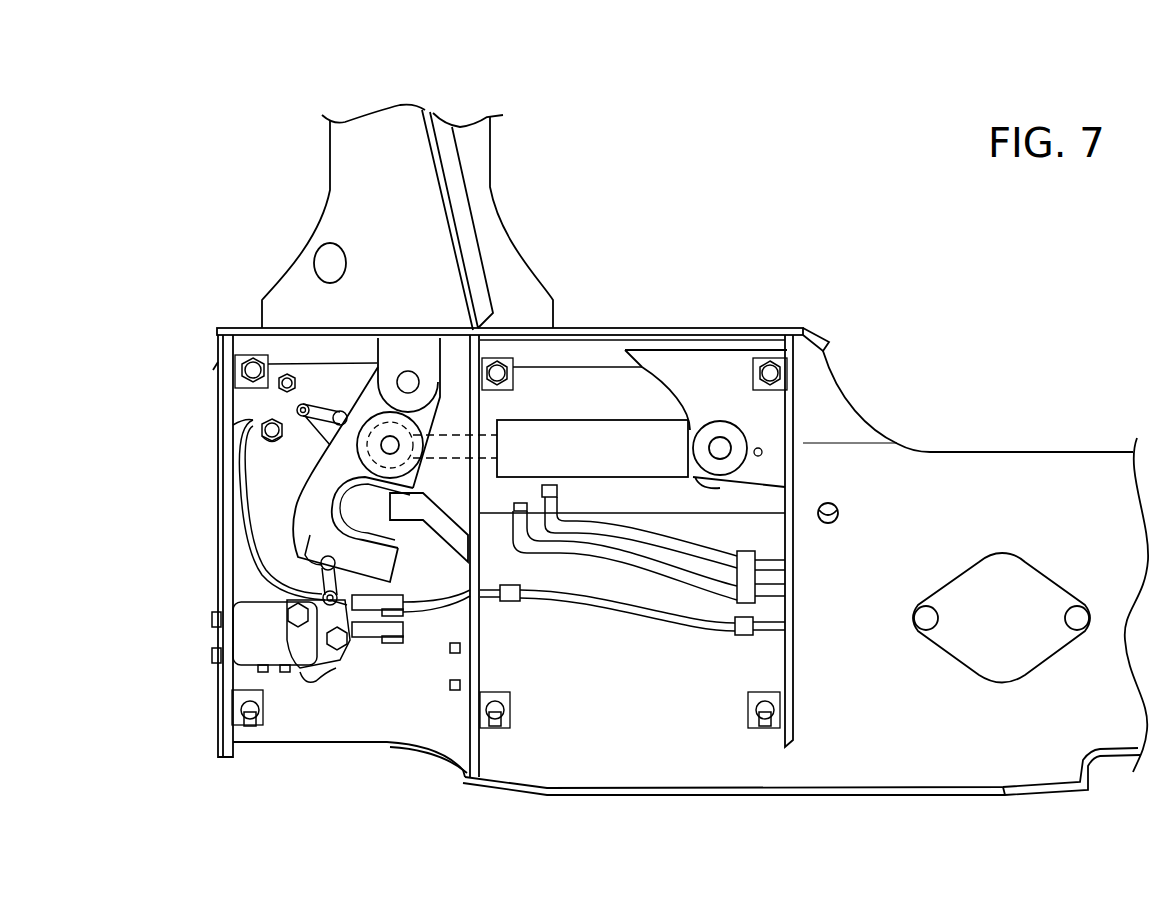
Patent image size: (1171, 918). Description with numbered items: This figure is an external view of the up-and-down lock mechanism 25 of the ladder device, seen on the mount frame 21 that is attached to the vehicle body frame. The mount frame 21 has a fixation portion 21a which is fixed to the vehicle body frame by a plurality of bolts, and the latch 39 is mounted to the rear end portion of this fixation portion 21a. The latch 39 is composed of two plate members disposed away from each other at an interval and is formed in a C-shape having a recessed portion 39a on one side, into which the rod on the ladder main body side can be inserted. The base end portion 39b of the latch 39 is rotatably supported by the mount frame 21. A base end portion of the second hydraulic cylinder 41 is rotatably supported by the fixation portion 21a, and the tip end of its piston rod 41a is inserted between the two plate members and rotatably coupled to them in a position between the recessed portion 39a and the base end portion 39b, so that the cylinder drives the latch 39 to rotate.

The mount frame 21 is at (1105, 437).
The fixation portion 21a is at (362, 723).
The up-and-down lock mechanism 25 is at (497, 372).
The latch 39 is at (325, 475).
The recessed portion 39a is at (345, 520).
The base end portion 39b is at (408, 371).
The second hydraulic cylinder 41 is at (608, 440).
The piston rod 41a is at (490, 452).